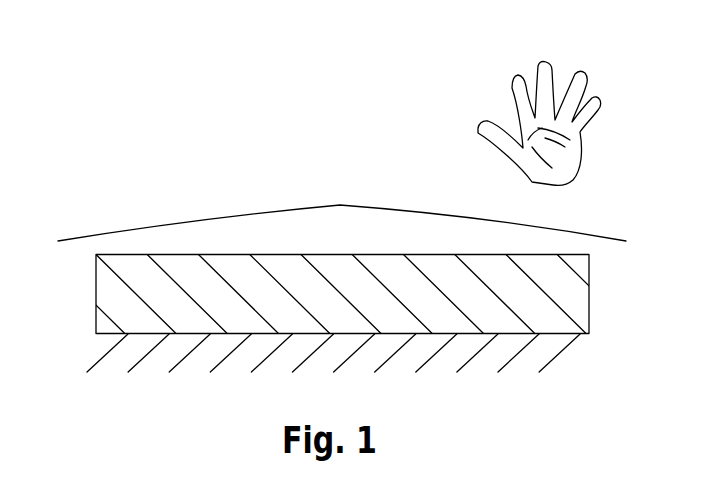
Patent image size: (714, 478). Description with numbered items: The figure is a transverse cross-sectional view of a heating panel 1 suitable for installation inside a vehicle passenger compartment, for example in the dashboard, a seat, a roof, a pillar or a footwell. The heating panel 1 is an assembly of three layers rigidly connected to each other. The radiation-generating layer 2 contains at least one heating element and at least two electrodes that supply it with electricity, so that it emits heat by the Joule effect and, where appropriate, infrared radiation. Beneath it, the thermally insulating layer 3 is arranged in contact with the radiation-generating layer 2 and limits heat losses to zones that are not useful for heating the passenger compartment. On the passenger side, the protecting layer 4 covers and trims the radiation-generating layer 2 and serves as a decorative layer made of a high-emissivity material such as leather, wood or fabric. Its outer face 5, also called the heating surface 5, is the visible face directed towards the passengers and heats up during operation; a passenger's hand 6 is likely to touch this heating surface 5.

The heating panel 1 is at (150, 154).
The radiation-generating layer 2 is at (94, 300).
The thermally insulating layer 3 is at (158, 365).
The protecting layer 4 is at (342, 194).
The outer face 5 is at (245, 207).
The hand 6 is at (468, 145).